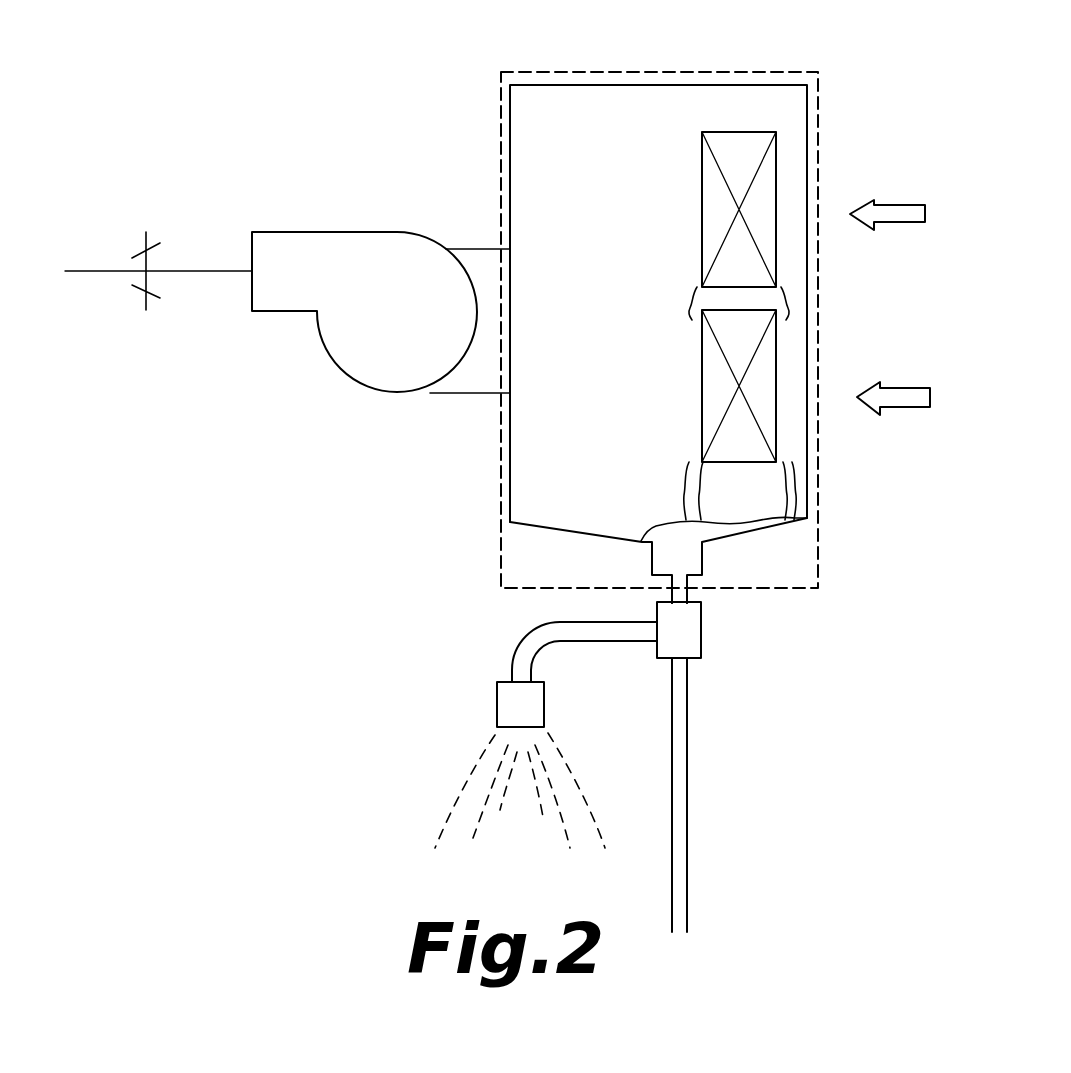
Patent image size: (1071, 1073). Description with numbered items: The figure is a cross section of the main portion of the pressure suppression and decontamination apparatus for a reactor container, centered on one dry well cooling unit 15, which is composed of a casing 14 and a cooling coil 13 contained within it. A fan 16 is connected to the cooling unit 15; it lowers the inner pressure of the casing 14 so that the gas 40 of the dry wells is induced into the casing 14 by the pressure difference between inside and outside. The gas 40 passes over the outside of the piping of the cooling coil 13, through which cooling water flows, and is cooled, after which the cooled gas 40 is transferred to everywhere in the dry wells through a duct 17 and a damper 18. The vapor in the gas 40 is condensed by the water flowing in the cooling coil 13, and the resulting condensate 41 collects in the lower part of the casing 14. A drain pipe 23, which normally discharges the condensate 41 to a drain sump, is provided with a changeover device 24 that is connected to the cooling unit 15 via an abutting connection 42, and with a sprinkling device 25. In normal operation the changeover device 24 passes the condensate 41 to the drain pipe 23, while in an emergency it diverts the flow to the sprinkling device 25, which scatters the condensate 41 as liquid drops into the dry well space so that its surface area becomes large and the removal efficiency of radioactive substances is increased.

The cooling coil 13 is at (748, 132).
The casing 14 is at (673, 85).
The dry well cooling unit 15 is at (500, 115).
The fan 16 is at (327, 231).
The duct 17 is at (208, 272).
The damper 18 is at (150, 230).
The drain pipe 23 is at (688, 875).
The changeover device 24 is at (703, 636).
The sprinkling device 25 is at (497, 700).
The gas 40 is at (893, 200).
The condensate 41 is at (748, 520).
The abutting connection 42 is at (690, 591).